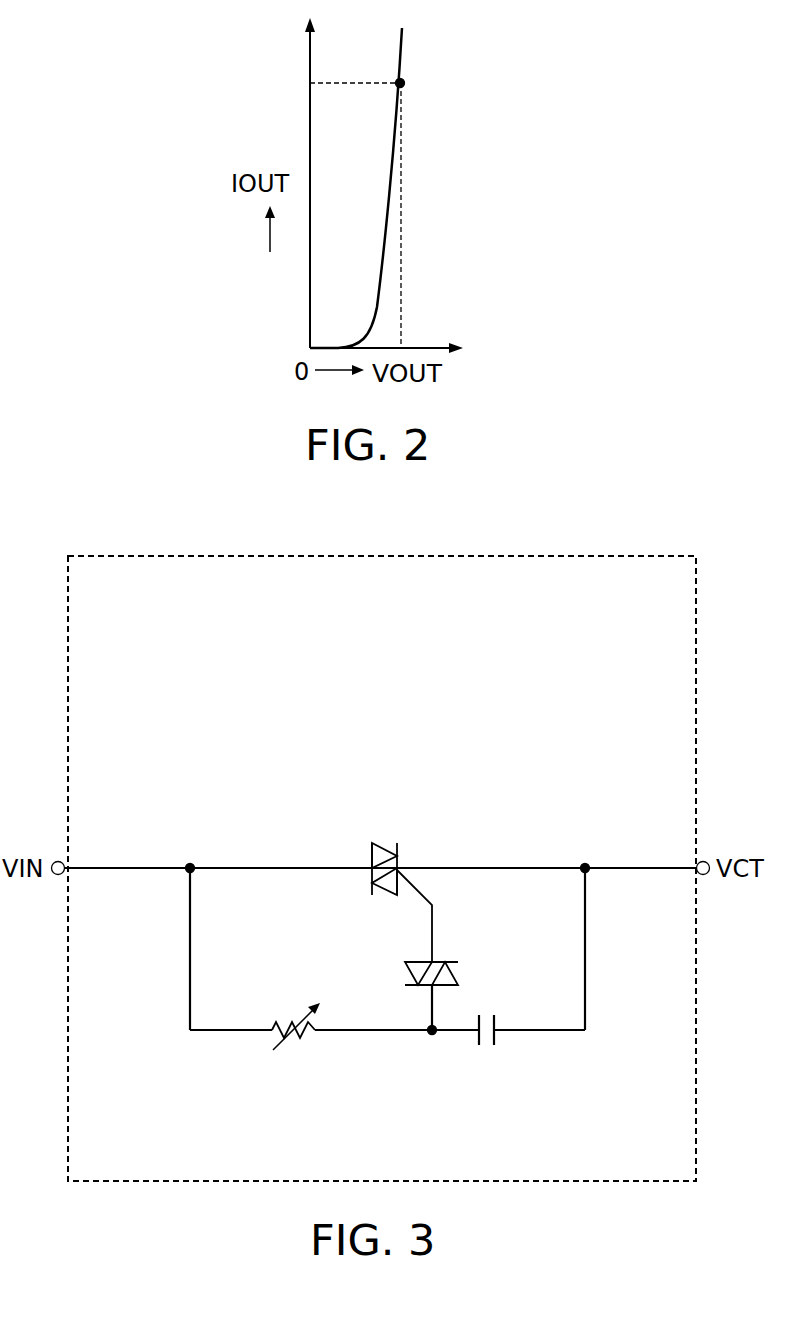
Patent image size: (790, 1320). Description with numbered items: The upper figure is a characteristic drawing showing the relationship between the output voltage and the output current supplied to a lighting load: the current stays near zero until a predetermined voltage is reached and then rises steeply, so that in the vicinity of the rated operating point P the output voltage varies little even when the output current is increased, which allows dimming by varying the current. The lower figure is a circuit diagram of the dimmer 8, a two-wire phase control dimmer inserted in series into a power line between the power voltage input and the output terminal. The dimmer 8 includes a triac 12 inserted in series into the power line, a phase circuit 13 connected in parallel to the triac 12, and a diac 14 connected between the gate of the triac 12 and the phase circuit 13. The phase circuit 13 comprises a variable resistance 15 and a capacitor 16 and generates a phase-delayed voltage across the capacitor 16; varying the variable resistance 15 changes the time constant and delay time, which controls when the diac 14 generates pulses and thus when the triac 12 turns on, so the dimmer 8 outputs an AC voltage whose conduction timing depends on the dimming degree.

In FIG. 2, the rated operating point P is at (409, 77).
In FIG. 3, the dimmer 8 is at (614, 556).
In FIG. 3, the triac 12 is at (375, 842).
In FIG. 3, the phase circuit 13 is at (387, 1077).
In FIG. 3, the diac 14 is at (458, 982).
In FIG. 3, the variable resistance 15 is at (293, 1041).
In FIG. 3, the capacitor 16 is at (477, 1059).